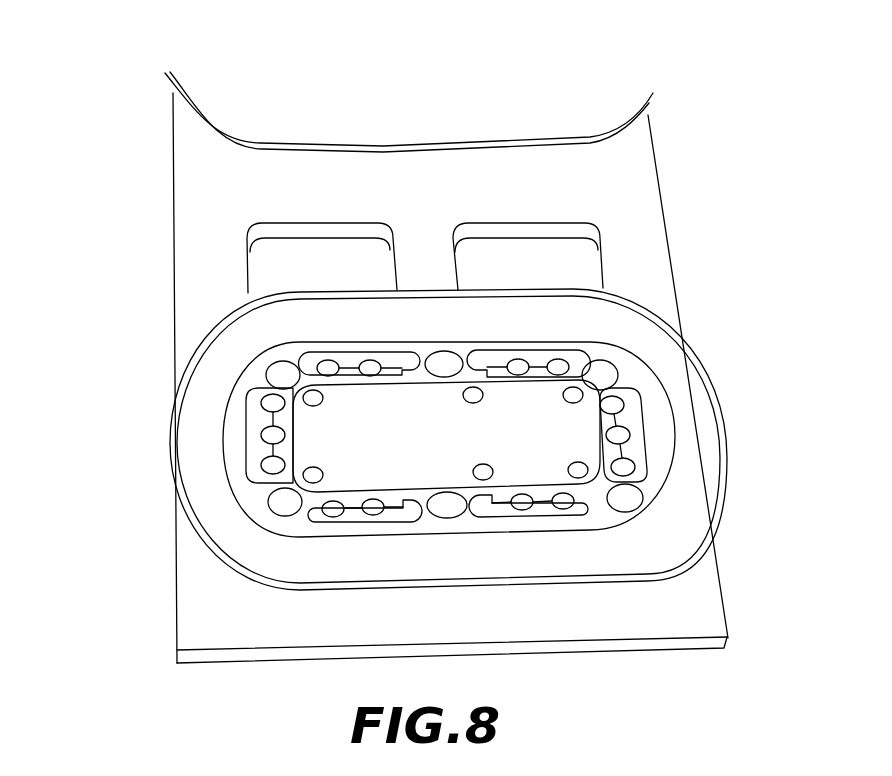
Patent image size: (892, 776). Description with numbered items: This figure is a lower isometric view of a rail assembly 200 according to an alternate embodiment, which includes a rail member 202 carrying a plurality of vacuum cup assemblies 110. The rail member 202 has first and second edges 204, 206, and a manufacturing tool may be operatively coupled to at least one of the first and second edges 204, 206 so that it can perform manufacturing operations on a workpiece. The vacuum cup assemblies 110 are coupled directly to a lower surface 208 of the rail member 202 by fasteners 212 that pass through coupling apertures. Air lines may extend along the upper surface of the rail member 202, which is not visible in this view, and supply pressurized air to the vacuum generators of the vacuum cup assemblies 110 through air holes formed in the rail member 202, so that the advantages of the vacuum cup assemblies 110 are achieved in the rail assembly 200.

The vacuum cup assembly 110 is at (668, 104).
The rail assembly 200 is at (163, 69).
The rail member 202 is at (152, 123).
The first edge 204 is at (655, 157).
The second edge 206 is at (172, 210).
The lower surface 208 is at (306, 208).
The fastener 212 is at (312, 398).